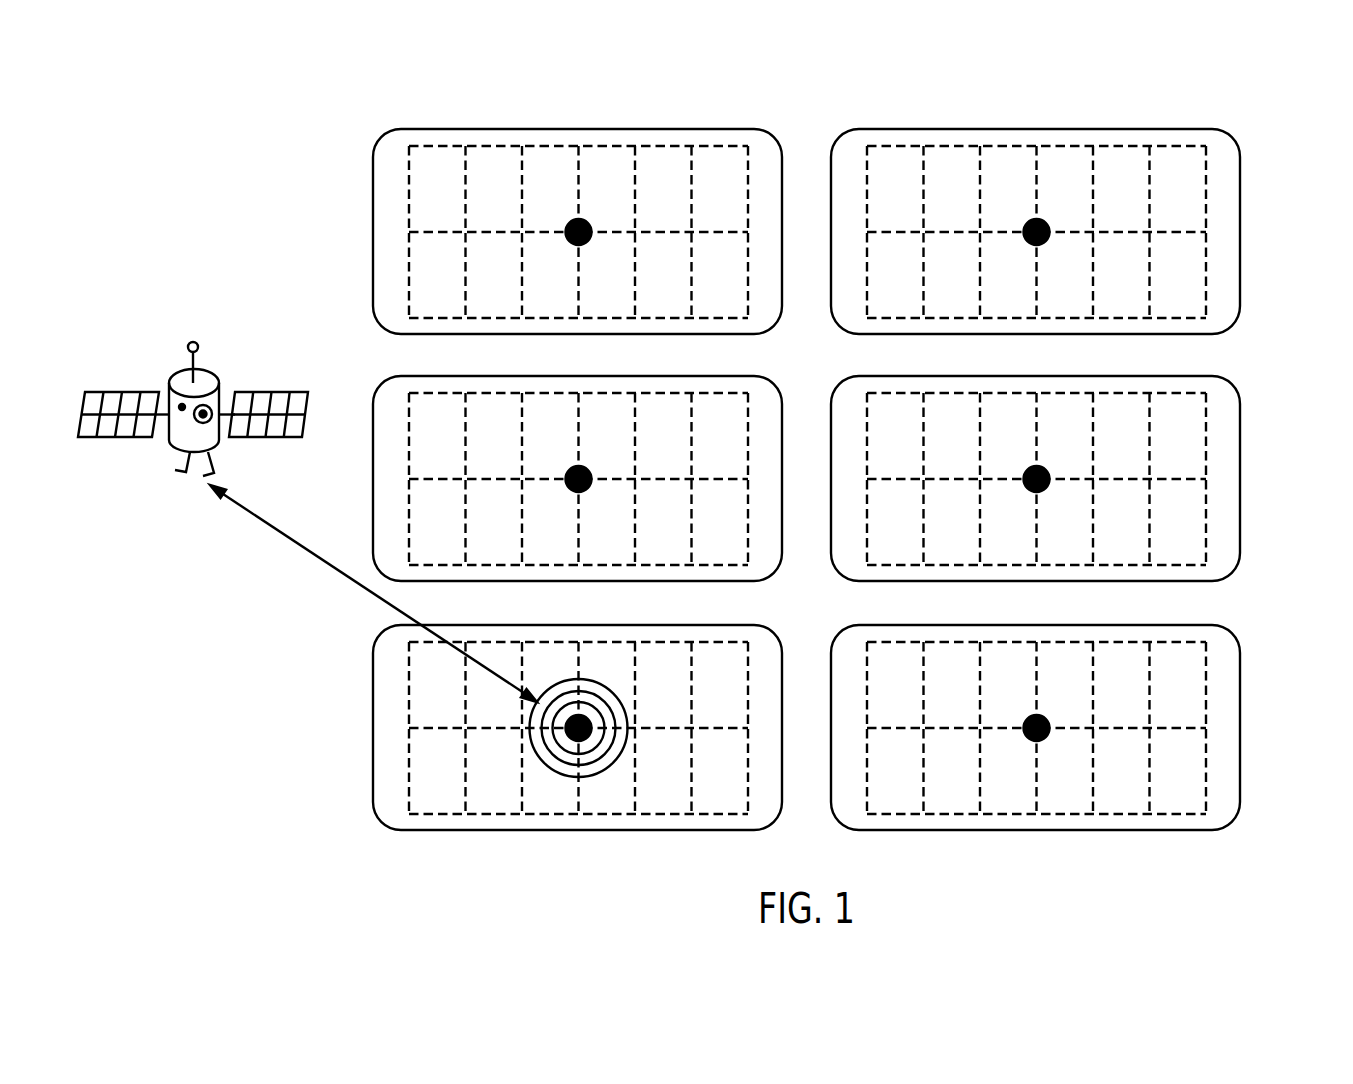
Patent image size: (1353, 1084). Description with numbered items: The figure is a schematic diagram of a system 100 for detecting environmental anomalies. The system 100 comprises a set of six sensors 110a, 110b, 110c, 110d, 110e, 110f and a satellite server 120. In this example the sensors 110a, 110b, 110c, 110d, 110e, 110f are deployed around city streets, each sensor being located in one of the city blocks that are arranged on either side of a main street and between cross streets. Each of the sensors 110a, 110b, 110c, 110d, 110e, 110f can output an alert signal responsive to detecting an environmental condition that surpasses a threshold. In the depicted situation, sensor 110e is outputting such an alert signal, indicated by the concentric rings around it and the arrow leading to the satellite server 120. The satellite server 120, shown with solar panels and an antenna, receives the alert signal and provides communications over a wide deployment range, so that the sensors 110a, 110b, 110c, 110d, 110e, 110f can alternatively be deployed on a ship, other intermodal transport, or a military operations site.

The system 100 is at (1335, 94).
The sensor 110a is at (558, 226).
The sensor 110b is at (1016, 226).
The sensor 110c is at (558, 473).
The sensor 110d is at (1016, 473).
The sensor 110e is at (556, 685).
The sensor 110f is at (1016, 722).
The satellite server 120 is at (176, 370).